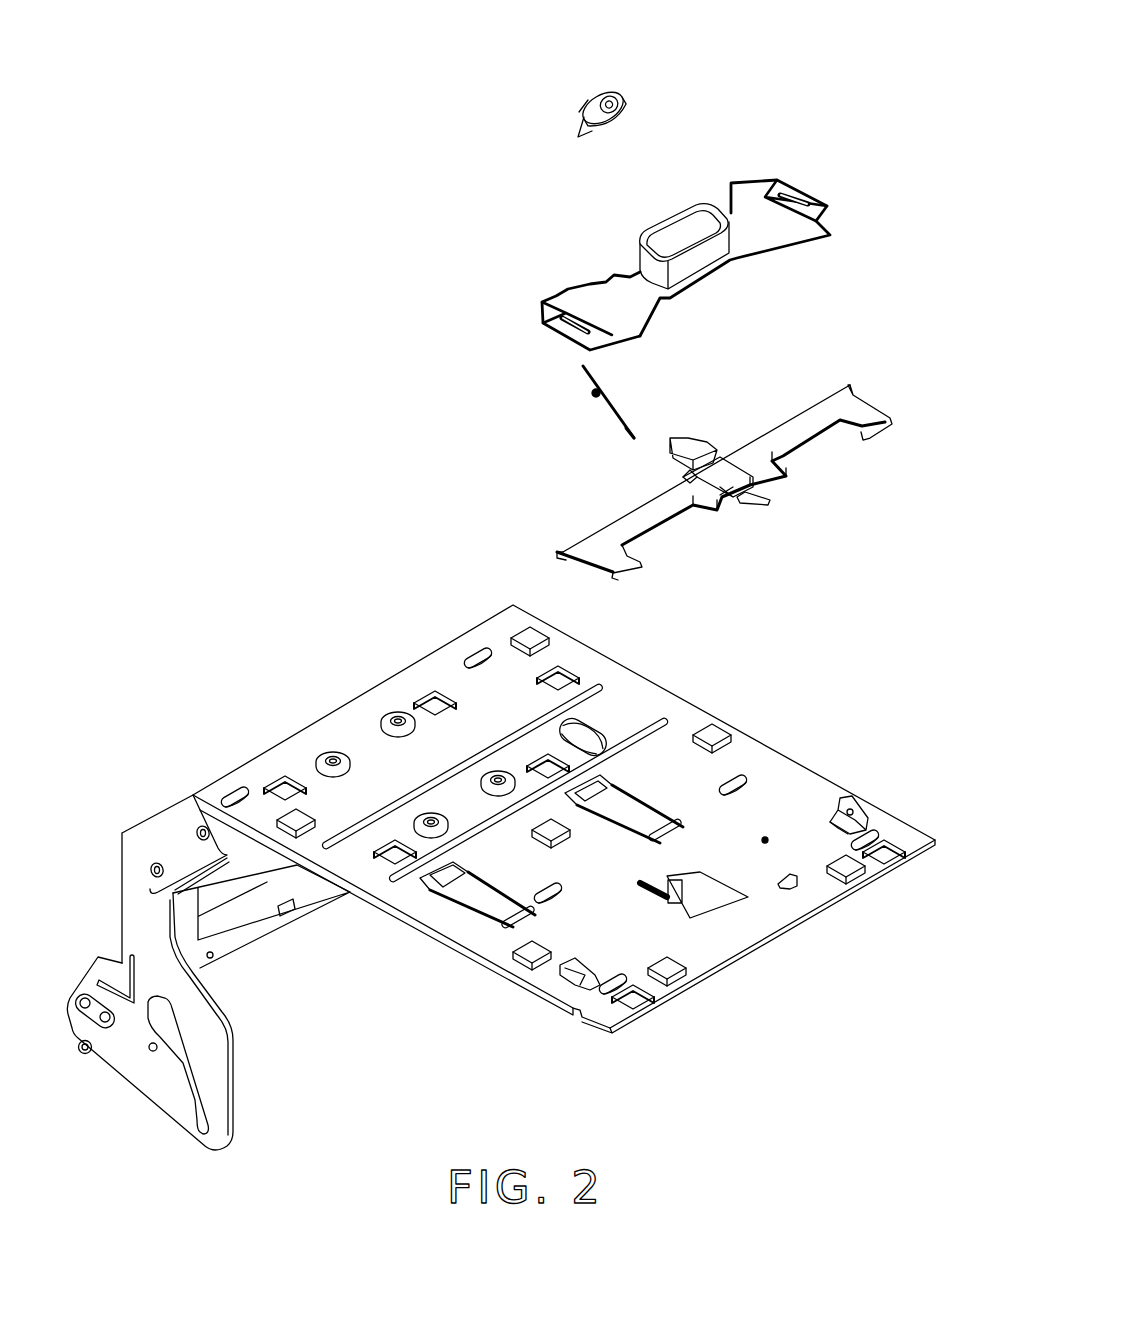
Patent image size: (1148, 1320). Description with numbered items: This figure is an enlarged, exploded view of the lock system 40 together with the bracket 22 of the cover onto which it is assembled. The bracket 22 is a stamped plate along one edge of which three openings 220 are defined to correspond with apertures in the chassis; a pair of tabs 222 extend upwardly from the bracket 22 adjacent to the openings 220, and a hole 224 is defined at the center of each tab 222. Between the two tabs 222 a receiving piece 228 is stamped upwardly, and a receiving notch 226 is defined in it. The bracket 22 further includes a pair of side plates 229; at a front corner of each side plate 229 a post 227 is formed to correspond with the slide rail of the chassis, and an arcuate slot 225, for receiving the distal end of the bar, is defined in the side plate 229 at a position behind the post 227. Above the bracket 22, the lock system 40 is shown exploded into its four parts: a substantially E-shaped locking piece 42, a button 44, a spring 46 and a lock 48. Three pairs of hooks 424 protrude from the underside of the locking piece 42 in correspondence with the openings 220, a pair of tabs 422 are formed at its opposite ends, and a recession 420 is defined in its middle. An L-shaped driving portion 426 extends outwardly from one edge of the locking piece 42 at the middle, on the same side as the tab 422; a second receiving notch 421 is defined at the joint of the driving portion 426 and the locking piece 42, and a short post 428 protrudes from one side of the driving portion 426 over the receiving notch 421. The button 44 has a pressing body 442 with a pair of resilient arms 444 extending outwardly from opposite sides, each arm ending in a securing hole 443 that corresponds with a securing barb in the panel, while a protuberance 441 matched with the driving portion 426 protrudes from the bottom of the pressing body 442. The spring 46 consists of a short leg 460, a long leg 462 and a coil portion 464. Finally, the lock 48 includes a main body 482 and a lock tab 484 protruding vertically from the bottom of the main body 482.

The bracket 22 is at (705, 694).
The openings 220 is at (885, 853).
The tabs 222 is at (850, 808).
The hole 224 is at (843, 815).
The arcuate slot 225 is at (172, 1033).
The receiving notch 226 is at (723, 903).
The post 227 is at (83, 1053).
The receiving piece 228 is at (740, 917).
The side plates 229 is at (177, 1082).
The lock system 40 is at (392, 77).
The locking piece 42 is at (463, 438).
The recession 420 is at (608, 523).
The second receiving notch 421 is at (720, 480).
The tabs 422 is at (567, 552).
The hooks 424 is at (610, 580).
The driving portion 426 is at (680, 452).
The short post 428 is at (687, 477).
The button 44 is at (456, 155).
The protuberance 441 is at (628, 243).
The pressing body 442 is at (673, 237).
The securing hole 443 is at (552, 300).
The resilient arms 444 is at (608, 280).
The spring 46 is at (463, 343).
The short leg 460 is at (583, 368).
The long leg 462 is at (618, 428).
The coil portion 464 is at (595, 393).
The lock 48 is at (456, 38).
The main body 482 is at (600, 88).
The lock tab 484 is at (580, 128).